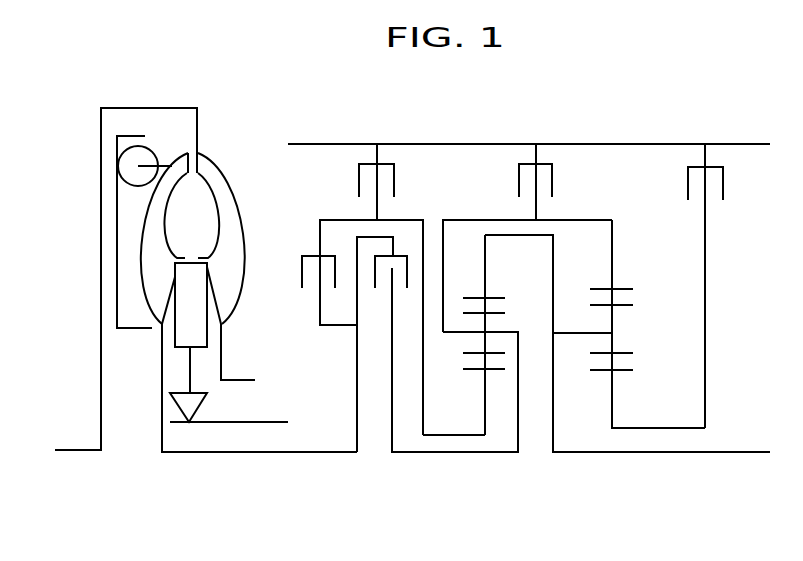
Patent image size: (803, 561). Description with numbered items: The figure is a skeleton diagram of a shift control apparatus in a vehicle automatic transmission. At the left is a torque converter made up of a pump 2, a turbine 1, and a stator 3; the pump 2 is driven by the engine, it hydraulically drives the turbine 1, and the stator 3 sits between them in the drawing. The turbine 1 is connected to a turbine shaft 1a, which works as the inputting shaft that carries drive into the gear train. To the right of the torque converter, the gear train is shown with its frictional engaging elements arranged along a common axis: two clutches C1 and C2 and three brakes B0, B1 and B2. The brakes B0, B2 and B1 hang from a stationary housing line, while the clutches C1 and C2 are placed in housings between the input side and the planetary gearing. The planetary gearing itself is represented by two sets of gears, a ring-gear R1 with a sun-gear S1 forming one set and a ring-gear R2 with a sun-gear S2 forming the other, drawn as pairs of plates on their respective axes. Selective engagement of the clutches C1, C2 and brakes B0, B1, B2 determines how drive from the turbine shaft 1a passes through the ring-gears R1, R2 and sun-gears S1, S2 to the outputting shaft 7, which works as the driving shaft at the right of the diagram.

The turbine 1 is at (150, 230).
The pump 2 is at (222, 186).
The stator 3 is at (185, 292).
The turbine shaft 1a is at (243, 452).
The outputting shaft 7 is at (703, 452).
The brake B0 is at (359, 180).
The brake B1 is at (688, 180).
The brake B2 is at (519, 180).
The clutch C1 is at (306, 255).
The clutch C2 is at (372, 275).
The ring-gear R1 is at (495, 297).
The ring-gear R2 is at (620, 289).
The sun-gear S1 is at (473, 371).
The sun-gear S2 is at (605, 372).